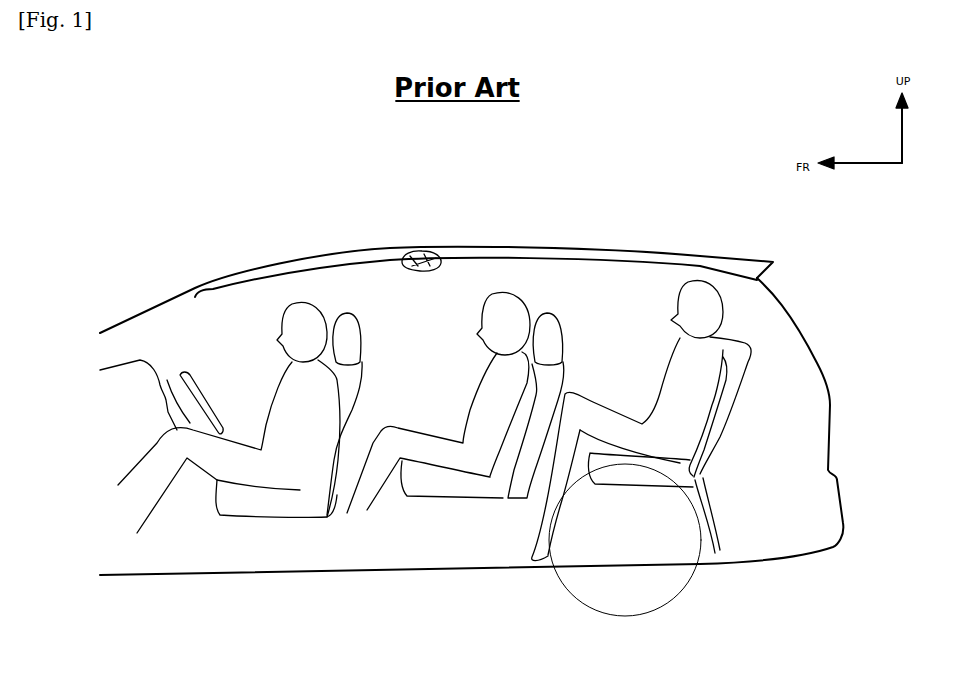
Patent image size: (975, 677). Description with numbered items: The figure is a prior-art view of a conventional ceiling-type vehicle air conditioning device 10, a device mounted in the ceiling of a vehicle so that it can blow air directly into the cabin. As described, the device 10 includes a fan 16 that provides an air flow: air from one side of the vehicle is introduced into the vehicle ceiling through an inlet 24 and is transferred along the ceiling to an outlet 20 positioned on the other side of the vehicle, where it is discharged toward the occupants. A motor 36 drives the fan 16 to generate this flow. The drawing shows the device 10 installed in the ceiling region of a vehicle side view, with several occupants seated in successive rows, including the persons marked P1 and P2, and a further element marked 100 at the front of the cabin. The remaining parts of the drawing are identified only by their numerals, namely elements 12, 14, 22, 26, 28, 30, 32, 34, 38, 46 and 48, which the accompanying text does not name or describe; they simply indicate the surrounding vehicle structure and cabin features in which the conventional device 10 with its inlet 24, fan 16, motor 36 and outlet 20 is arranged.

The ceiling-type vehicle air conditioning device 10 is at (405, 296).
The vehicle cabin 12 is at (414, 374).
The roof 14 is at (379, 241).
The fan 16 is at (400, 273).
The outlet 20 is at (445, 258).
The roof panel 22 is at (440, 252).
The inlet 24 is at (398, 262).
The light source 26 is at (438, 266).
The windshield 28 is at (214, 228).
The front seat 30 is at (336, 400).
The second-row seat 32 is at (567, 373).
The third-row seat 34 is at (738, 408).
The motor 36 is at (413, 250).
The roof cross member 38 is at (425, 250).
The roof side rail 46 is at (538, 250).
The headliner 48 is at (565, 263).
The steering wheel 100 is at (172, 372).
The second-row occupant P1 is at (478, 370).
The third-row occupant P2 is at (670, 370).